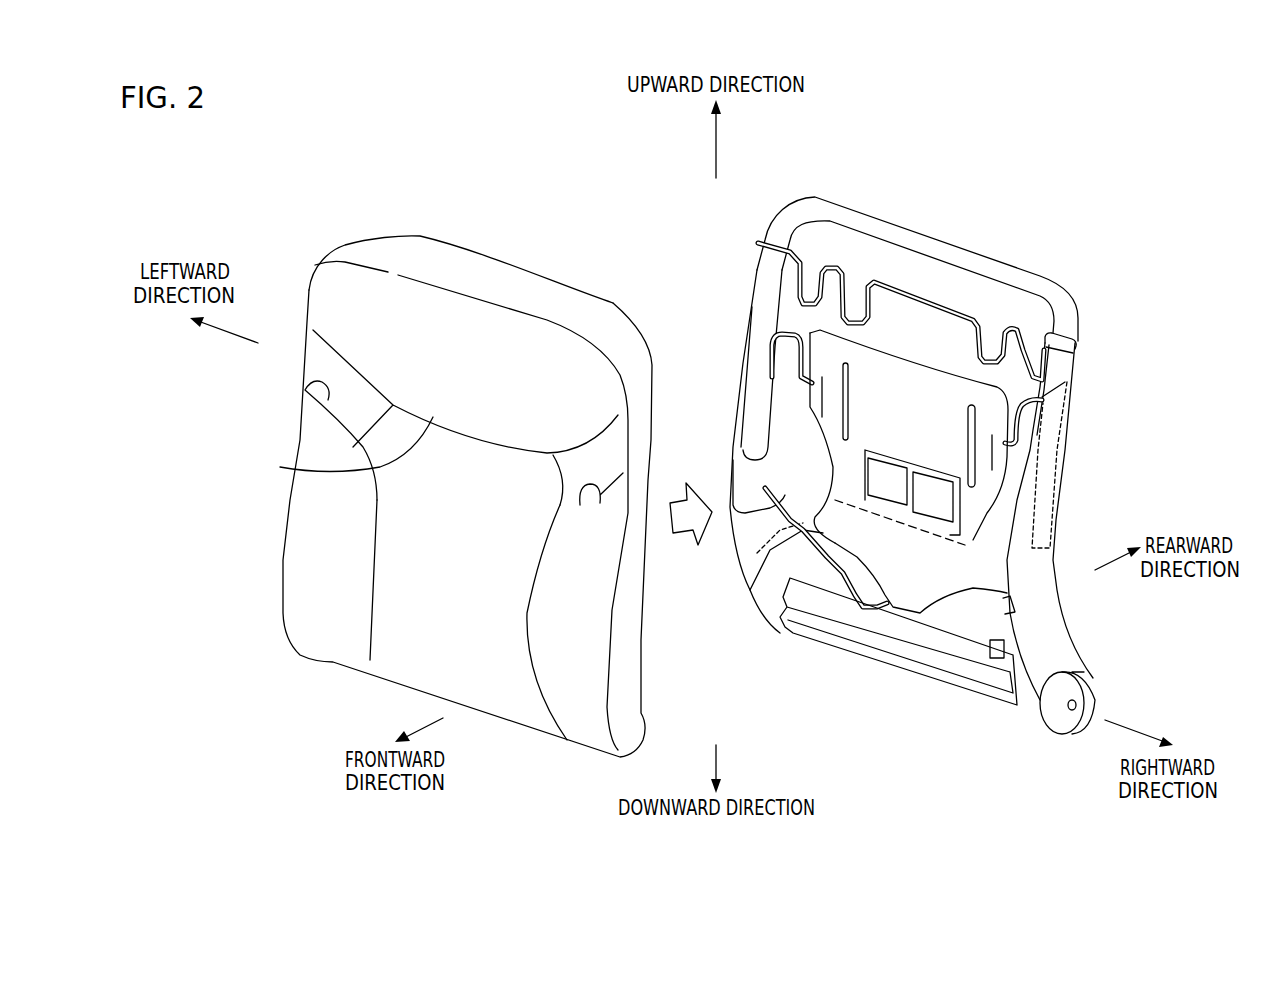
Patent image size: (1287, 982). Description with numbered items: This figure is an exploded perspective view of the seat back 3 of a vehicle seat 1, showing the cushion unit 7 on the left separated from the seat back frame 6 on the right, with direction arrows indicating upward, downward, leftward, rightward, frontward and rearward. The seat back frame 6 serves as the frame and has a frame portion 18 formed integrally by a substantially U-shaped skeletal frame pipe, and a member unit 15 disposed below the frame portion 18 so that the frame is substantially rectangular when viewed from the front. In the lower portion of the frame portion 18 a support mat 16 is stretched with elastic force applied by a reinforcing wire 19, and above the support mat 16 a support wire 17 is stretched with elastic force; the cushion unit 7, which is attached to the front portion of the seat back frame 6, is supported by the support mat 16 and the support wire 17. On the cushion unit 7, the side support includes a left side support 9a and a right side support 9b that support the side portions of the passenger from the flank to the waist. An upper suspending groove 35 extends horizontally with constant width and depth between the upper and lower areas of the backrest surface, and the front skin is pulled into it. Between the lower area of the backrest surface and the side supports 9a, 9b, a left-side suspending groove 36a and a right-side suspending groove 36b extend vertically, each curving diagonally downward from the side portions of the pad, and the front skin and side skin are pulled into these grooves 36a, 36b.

The vehicle seat 1 is at (362, 212).
The seat back 3 is at (387, 318).
The cushion unit 7 is at (622, 287).
The seat back frame 6 is at (1097, 301).
The left side support 9a is at (327, 580).
The right side support 9b is at (572, 657).
The member unit 15 is at (965, 670).
The support mat 16 is at (1003, 465).
The support wire 17 is at (1045, 353).
The frame portion 18 is at (1058, 370).
The reinforcing wire 19 is at (787, 363).
The upper suspending groove 35 is at (363, 473).
The left-side suspending groove 36a is at (303, 382).
The right-side suspending groove 36b is at (597, 507).